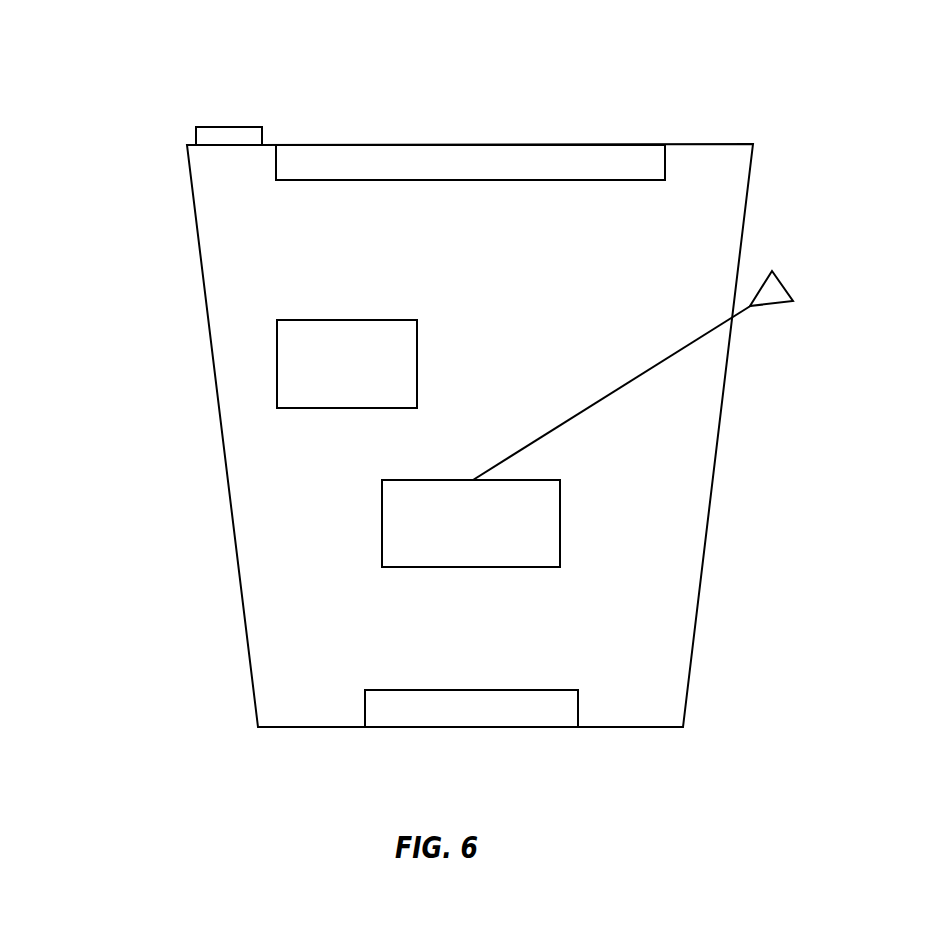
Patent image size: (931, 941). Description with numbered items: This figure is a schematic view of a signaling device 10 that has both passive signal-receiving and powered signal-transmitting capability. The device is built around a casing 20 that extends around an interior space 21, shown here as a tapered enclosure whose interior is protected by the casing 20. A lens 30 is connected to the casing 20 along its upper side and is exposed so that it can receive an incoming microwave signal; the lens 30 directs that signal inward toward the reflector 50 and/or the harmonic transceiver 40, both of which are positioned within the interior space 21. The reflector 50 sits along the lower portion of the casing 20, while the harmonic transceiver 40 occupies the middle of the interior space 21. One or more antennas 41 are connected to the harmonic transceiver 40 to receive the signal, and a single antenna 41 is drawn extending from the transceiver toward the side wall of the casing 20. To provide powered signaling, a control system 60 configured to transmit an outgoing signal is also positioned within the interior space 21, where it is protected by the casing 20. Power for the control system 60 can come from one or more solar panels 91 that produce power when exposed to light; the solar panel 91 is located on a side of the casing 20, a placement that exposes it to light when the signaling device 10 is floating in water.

The signaling device 10 is at (108, 148).
The casing 20 is at (720, 433).
The interior space 21 is at (350, 460).
The lens 30 is at (470, 162).
The harmonic transceiver 40 is at (567, 436).
The antenna 41 is at (770, 305).
The reflector 50 is at (471, 708).
The control system 60 is at (347, 364).
The solar panel 91 is at (225, 137).